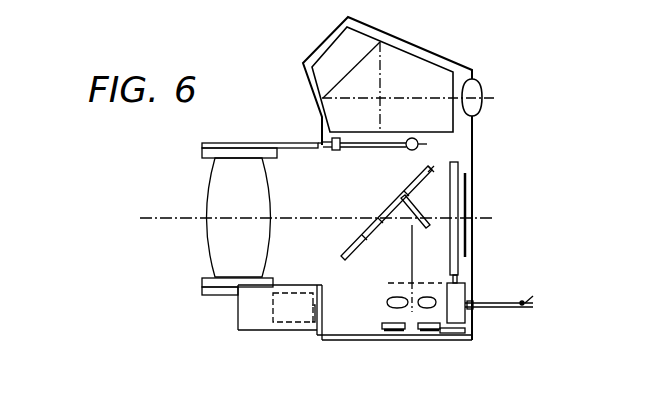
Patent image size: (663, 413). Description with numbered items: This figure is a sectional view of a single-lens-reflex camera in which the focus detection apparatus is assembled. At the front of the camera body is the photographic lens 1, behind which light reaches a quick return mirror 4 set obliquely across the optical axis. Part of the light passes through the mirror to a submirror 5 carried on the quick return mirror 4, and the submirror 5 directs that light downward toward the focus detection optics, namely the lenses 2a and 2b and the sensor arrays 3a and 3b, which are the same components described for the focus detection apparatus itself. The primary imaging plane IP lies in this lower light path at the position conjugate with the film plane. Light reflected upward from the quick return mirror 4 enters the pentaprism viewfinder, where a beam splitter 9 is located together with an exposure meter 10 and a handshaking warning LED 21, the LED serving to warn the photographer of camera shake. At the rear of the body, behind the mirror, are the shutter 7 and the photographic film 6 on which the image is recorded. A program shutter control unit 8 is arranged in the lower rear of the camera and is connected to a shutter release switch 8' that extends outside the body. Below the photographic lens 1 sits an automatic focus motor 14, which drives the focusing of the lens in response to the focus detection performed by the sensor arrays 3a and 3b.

The photographic lens 1 is at (271, 178).
The exposure meter 10 is at (336, 151).
The beam splitter 9 is at (356, 150).
The handshaking warning LED 21 is at (410, 151).
The photographic film 6 is at (465, 167).
The shutter 7 is at (449, 200).
The quick return mirror 4 is at (342, 252).
The submirror 5 is at (418, 224).
The program shutter control unit 8 is at (447, 290).
The shutter release switch 8' is at (510, 286).
The primary imaging plane IP is at (388, 283).
The lens 2b is at (421, 297).
The lens 2a is at (387, 302).
The sensor array 3a is at (384, 324).
The sensor array 3b is at (466, 331).
The automatic focus motor 14 is at (272, 308).